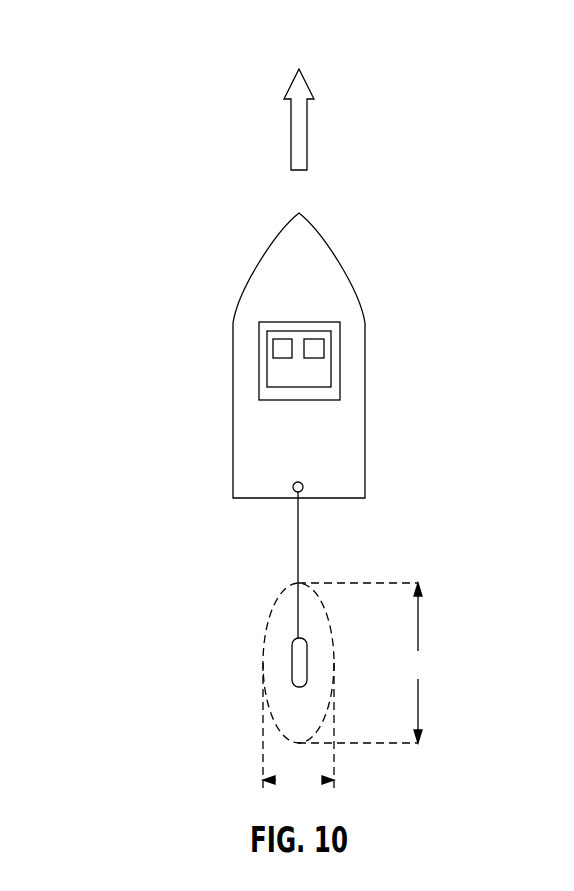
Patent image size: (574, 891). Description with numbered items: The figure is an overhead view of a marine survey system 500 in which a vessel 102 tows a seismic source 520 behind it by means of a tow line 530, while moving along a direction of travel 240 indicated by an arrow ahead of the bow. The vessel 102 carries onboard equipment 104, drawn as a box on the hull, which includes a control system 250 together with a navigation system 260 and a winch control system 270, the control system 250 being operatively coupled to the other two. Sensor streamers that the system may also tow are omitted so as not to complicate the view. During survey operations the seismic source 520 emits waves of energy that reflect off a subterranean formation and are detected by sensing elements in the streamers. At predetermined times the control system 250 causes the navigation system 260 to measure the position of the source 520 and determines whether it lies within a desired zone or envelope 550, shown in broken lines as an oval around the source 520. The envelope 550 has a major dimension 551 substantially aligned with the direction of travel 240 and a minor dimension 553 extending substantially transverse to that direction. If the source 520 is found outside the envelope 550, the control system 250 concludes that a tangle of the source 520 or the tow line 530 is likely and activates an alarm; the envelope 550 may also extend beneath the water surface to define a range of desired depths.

The marine survey system 500 is at (146, 50).
The direction of travel 240 is at (307, 134).
The vessel 102 is at (256, 267).
The onboard equipment 104 is at (340, 330).
The control system 250 is at (267, 382).
The navigation system 260 is at (273, 347).
The winch control system 270 is at (324, 347).
The tow line 530 is at (299, 543).
The seismic source 520 is at (292, 663).
The envelope 550 is at (293, 585).
The major dimension 551 is at (368, 663).
The minor dimension 553 is at (298, 731).